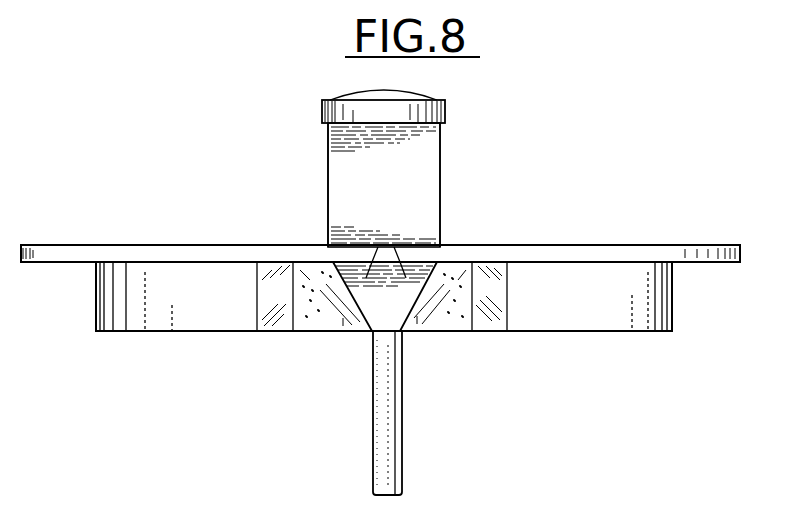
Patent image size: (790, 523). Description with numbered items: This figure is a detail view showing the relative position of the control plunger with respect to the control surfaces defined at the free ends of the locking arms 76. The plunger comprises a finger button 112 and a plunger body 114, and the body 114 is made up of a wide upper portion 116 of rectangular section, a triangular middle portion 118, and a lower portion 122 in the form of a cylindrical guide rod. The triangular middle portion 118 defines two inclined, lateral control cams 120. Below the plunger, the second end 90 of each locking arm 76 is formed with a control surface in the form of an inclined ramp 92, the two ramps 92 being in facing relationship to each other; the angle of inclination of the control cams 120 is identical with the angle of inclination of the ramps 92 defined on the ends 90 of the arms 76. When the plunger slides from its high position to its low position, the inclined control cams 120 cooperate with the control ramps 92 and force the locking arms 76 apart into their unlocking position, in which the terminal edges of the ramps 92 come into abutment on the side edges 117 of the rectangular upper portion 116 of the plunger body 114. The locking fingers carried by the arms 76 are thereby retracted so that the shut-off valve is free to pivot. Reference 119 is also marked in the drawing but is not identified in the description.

The locking arm 76 is at (220, 315).
The second end 90 is at (343, 322).
The inclined ramp 92 is at (394, 247).
The finger button 112 is at (418, 108).
The plunger body 114 is at (318, 148).
The upper portion 116 is at (412, 177).
The side edge 117 is at (327, 175).
The triangular middle portion 118 is at (410, 300).
The element 119 is at (661, 518).
The control cam 120 is at (343, 278).
The lower portion 122 is at (385, 428).